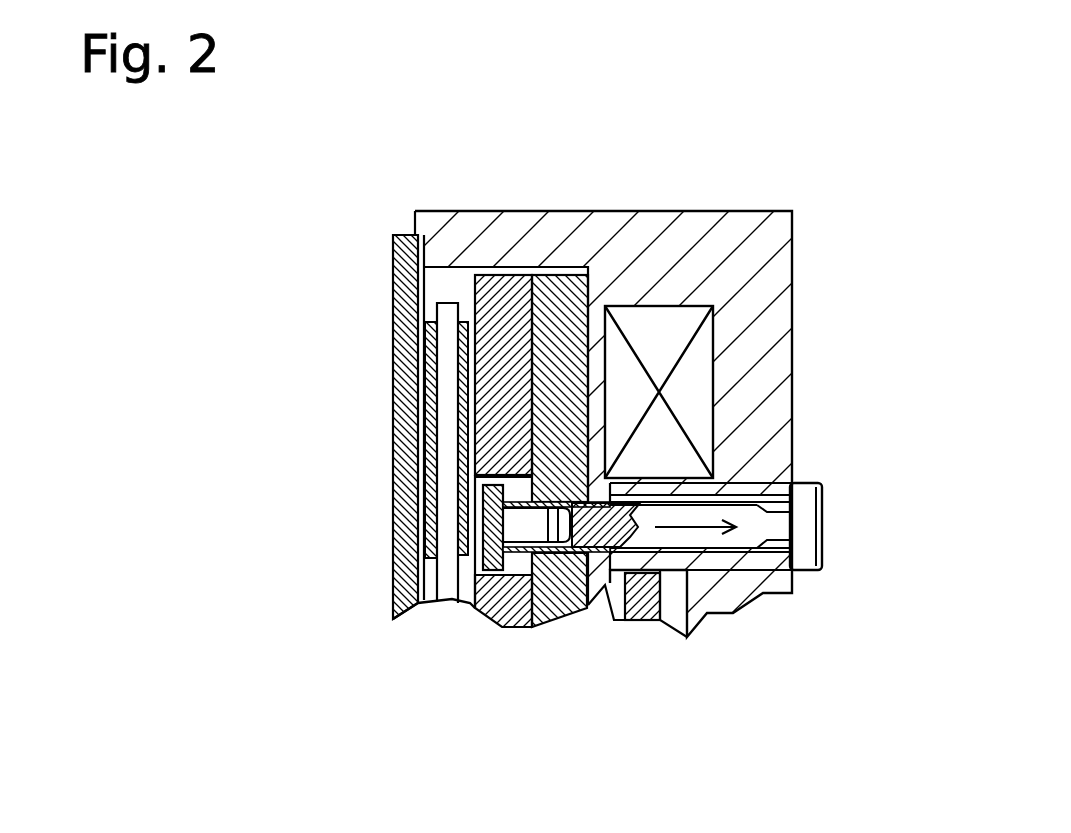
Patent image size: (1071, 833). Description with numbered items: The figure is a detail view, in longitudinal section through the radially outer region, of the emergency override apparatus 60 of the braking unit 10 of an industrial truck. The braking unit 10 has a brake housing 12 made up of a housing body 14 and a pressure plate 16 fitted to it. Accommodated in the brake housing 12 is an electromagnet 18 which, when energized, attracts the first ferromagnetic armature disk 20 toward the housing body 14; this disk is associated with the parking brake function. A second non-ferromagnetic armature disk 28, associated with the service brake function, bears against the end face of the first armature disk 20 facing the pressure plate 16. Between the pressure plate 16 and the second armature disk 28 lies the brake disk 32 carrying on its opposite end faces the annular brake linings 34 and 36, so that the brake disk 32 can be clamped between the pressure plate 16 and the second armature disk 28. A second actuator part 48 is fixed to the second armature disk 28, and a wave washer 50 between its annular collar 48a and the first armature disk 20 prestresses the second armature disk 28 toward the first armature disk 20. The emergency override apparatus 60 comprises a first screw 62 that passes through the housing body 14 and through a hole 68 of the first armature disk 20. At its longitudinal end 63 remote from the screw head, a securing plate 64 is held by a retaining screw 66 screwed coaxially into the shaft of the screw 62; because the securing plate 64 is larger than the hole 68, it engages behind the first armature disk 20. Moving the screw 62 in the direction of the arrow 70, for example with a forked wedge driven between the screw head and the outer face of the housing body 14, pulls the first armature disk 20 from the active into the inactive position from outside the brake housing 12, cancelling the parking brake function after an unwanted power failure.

The braking unit 10 is at (820, 173).
The brake housing 12 is at (810, 287).
The housing body 14 is at (775, 345).
The pressure plate 16 is at (408, 296).
The electromagnet 18 is at (651, 325).
The first ferromagnetic armature disk 20 is at (562, 297).
The second non-ferromagnetic armature disk 28 is at (507, 300).
The brake disk 32 is at (443, 580).
The brake lining 34 is at (430, 300).
The brake lining 36 is at (466, 320).
The second actuator part 48 is at (642, 645).
The annular collar 48a is at (645, 593).
The wave washer 50 is at (597, 600).
The emergency override apparatus 60 is at (857, 517).
The first screw 62 is at (800, 490).
The longitudinal end 63 is at (522, 600).
The securing plate 64 is at (500, 548).
The retaining screw 66 is at (520, 527).
The hole 68 is at (548, 497).
The arrow 70 is at (703, 530).